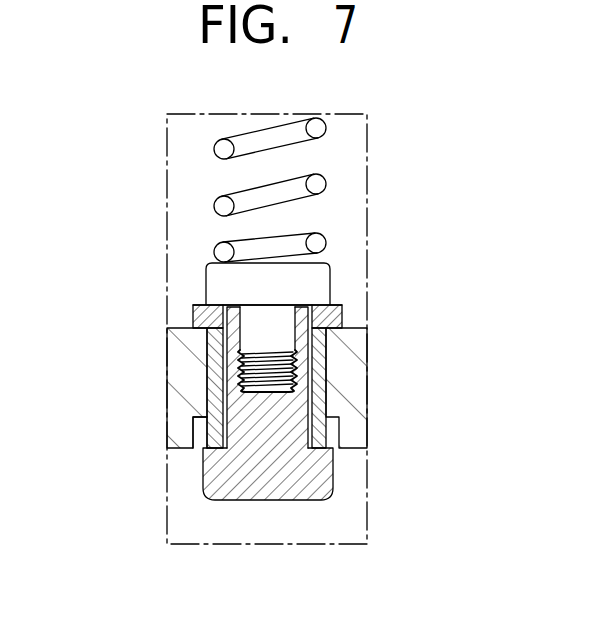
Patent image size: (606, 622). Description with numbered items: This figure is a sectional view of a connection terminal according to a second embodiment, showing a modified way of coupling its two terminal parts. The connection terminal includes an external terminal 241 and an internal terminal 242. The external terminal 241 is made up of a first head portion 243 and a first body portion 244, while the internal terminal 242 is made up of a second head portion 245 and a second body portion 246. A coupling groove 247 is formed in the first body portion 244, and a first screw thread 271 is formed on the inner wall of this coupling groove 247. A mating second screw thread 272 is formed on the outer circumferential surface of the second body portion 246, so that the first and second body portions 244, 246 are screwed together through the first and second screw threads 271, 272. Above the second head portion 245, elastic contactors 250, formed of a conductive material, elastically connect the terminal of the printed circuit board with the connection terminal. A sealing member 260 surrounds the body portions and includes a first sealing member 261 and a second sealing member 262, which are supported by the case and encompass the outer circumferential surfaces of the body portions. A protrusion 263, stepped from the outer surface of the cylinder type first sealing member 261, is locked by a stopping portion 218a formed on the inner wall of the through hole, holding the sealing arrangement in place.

The stopping portion 218a is at (193, 435).
The external terminal 241 is at (357, 405).
The internal terminal 242 is at (294, 312).
The first head portion 243 is at (308, 478).
The first body portion 244 is at (288, 427).
The second head portion 245 is at (320, 283).
The second body portion 246 is at (277, 333).
The coupling groove 247 is at (246, 317).
The elastic contactors 250 is at (318, 183).
The sealing member 260 is at (197, 376).
The first sealing member 261 is at (212, 376).
The second sealing member 262 is at (205, 318).
The protrusion 263 is at (210, 424).
The first screw thread 271 is at (276, 380).
The second screw thread 272 is at (257, 378).